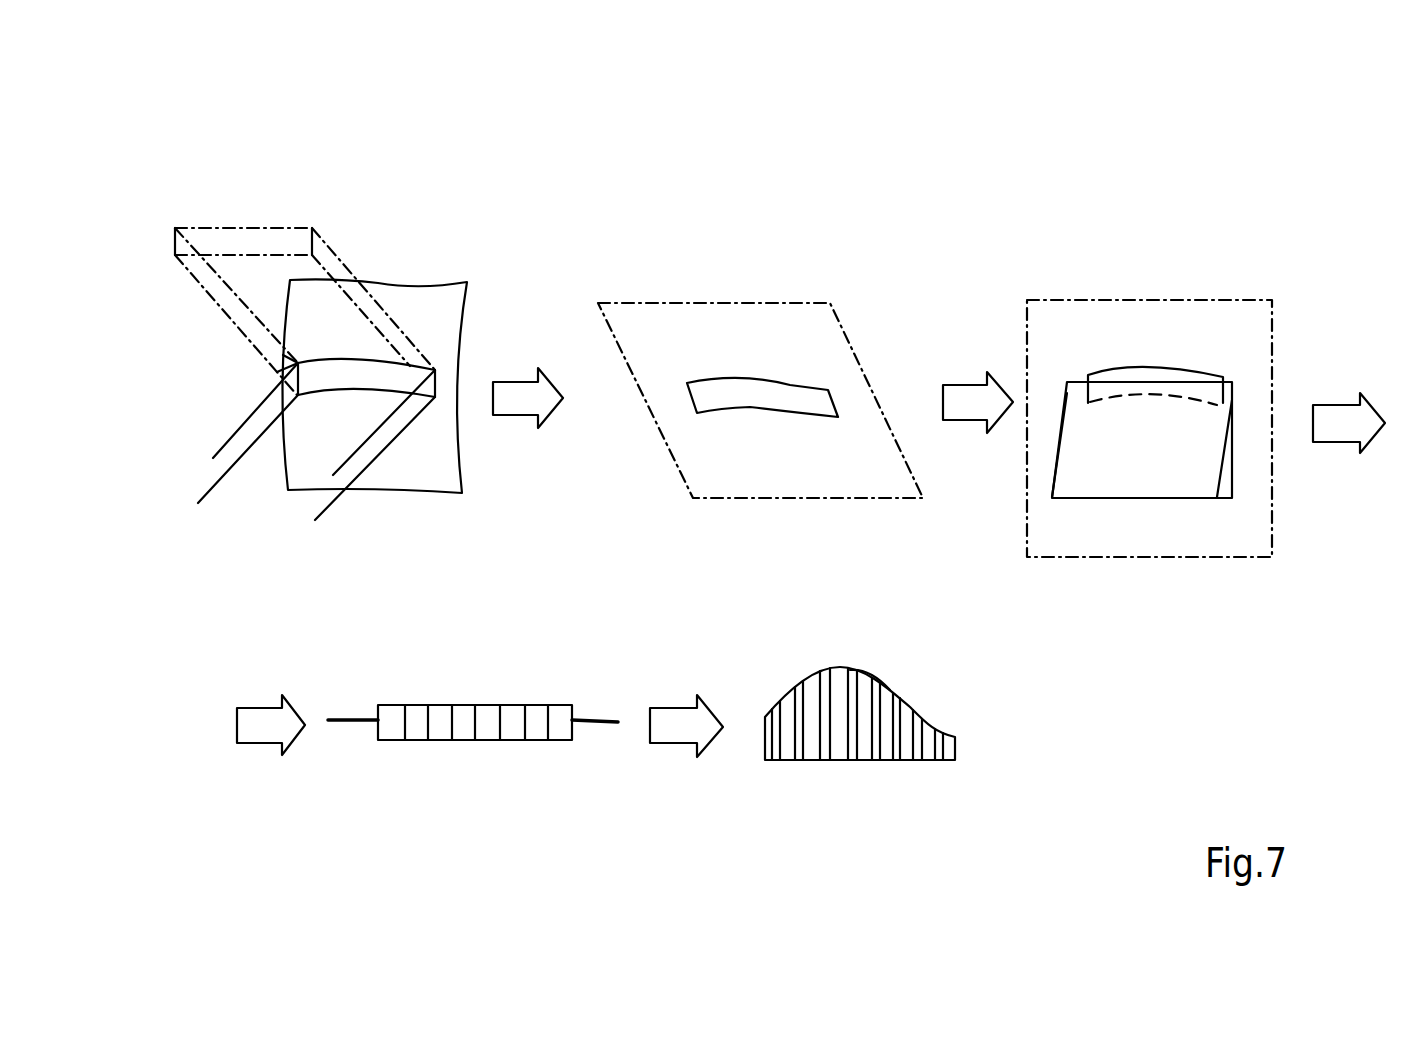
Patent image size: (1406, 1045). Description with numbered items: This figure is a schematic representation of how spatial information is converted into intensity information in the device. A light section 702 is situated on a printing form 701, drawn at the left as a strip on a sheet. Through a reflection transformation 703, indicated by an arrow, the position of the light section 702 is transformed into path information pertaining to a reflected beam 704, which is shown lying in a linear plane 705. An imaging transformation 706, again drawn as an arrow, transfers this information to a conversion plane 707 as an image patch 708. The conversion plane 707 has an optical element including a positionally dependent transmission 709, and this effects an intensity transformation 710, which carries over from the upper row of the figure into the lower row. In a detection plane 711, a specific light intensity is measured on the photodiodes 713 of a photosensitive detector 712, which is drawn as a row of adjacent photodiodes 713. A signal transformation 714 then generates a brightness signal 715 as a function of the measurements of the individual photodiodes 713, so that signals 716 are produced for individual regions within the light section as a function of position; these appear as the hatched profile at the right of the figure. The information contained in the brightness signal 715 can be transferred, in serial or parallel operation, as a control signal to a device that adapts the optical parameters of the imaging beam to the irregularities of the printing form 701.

The printing form 701 is at (293, 240).
The light section 702 is at (442, 298).
The process step arrow 703 is at (528, 397).
The reflected beam 704 is at (732, 372).
The linear plane 705 is at (810, 303).
The imaging transformation 706 is at (972, 397).
The conversion plane 707 is at (1027, 333).
The image patch 708 is at (1167, 373).
The positionally dependent transmission 709 is at (1080, 390).
The intensity transformation 710 is at (1352, 423).
The detection plane 711 is at (358, 722).
The photosensitive detector 712 is at (390, 743).
The photodiodes 713 is at (467, 725).
The signal transformation 714 is at (673, 723).
The brightness signal 715 is at (800, 743).
The signals 716 is at (892, 707).